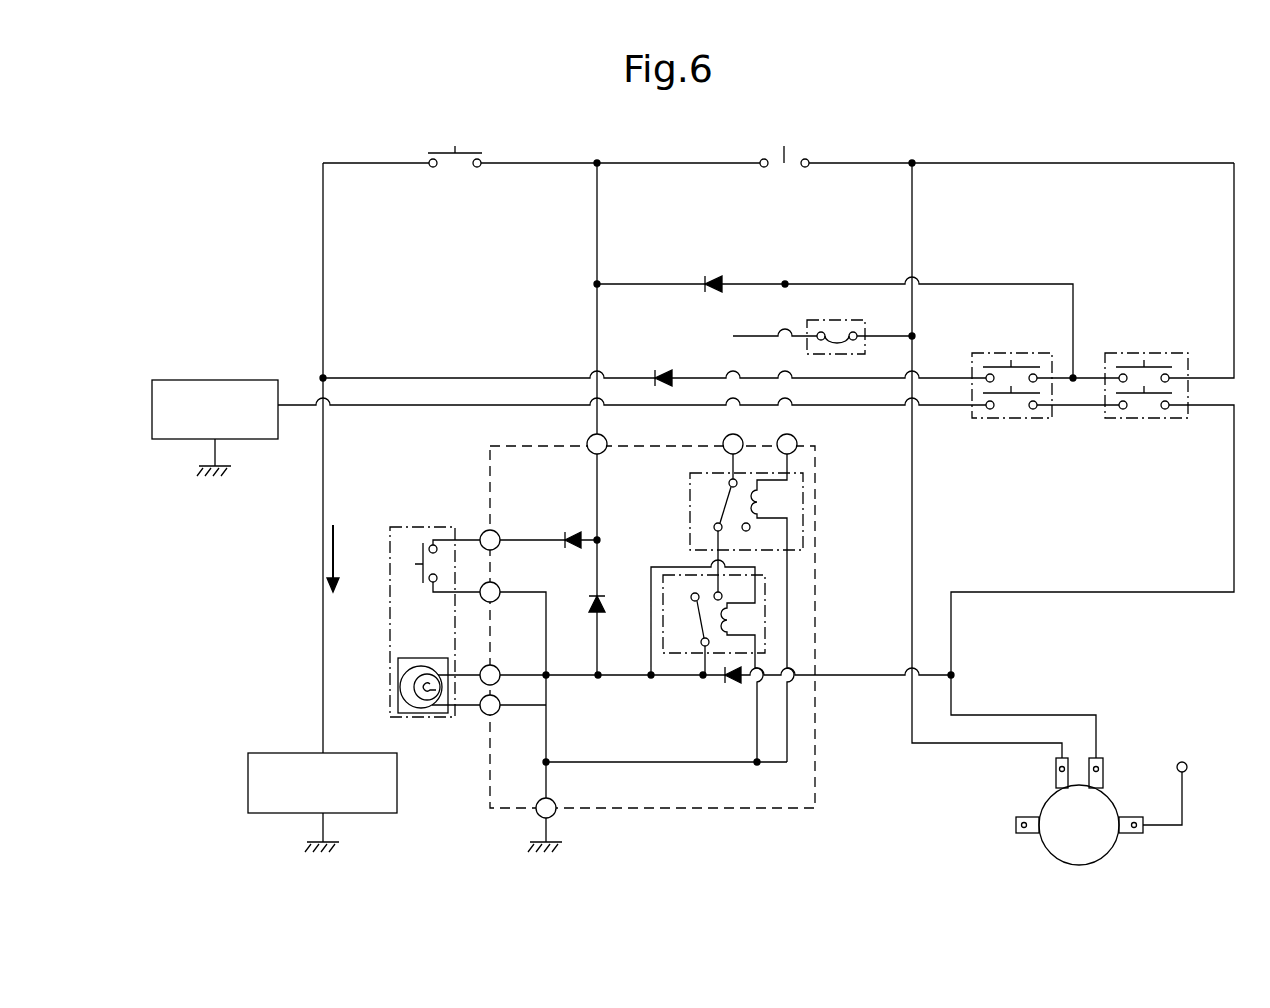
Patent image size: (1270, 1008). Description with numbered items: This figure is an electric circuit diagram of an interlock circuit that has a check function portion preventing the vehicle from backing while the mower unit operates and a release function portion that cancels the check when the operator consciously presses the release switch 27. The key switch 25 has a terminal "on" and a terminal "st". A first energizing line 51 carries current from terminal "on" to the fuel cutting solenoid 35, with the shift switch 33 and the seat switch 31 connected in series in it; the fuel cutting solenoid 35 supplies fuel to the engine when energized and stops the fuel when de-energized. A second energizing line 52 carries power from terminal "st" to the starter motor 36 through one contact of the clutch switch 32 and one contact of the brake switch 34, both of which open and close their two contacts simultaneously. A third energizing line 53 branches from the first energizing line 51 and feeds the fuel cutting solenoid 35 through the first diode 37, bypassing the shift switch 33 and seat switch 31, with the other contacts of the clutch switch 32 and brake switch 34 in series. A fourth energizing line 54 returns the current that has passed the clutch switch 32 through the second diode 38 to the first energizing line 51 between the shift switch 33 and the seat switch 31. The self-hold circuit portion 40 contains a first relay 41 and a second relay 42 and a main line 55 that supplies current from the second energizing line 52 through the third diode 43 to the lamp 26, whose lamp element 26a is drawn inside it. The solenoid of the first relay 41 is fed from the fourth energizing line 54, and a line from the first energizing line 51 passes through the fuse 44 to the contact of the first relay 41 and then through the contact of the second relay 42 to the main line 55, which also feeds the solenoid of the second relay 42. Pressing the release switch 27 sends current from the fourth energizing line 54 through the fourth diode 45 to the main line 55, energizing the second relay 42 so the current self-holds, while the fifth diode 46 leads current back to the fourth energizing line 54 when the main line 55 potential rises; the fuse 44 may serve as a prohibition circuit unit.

The key switch 25 is at (1107, 843).
The lamp 26 is at (434, 712).
The lamp 26a is at (405, 681).
The release switch 27 is at (416, 560).
The seat switch 31 is at (460, 168).
The clutch switch 32 is at (1128, 352).
The shift switch 33 is at (786, 168).
The brake switch 34 is at (1005, 420).
The fuel cutting solenoid 35 is at (292, 752).
The starter motor 36 is at (226, 379).
The first diode 37 is at (658, 373).
The second diode 38 is at (710, 279).
The self-hold circuit portion 40 is at (488, 472).
The first relay 41 is at (690, 520).
The second relay 42 is at (663, 602).
The third diode 43 is at (722, 688).
The fuse 44 is at (830, 320).
The fourth diode 45 is at (568, 536).
The fifth diode 46 is at (592, 595).
The first energizing line 51 is at (543, 170).
The second energizing line 52 is at (944, 405).
The third energizing line 53 is at (448, 377).
The fourth energizing line 54 is at (597, 246).
The main line 55 is at (624, 680).